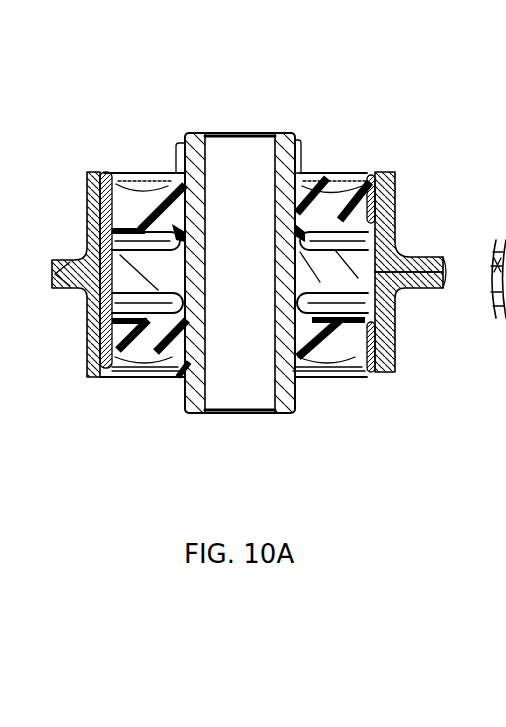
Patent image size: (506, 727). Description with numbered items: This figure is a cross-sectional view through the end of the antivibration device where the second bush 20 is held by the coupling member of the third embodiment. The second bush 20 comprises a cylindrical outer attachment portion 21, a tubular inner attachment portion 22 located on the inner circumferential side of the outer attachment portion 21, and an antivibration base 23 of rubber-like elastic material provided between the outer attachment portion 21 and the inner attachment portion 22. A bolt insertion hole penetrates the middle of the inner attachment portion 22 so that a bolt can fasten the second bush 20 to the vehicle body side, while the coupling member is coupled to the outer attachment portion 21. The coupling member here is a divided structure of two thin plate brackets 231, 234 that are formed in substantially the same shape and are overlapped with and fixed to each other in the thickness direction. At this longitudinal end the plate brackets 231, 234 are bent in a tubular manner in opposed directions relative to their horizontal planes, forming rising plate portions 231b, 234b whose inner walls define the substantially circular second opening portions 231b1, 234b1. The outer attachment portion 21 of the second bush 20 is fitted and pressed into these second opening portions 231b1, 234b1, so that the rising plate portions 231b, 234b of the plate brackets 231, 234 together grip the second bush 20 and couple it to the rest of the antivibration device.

The second bush 20 is at (338, 109).
The outer attachment portion 21 is at (105, 173).
The inner attachment portion 22 is at (289, 146).
The antivibration base 23 is at (133, 205).
The plate bracket 231 is at (410, 133).
The rising plate portion 231b is at (394, 227).
The second opening portion 231b1 is at (375, 174).
The plate bracket 234 is at (418, 422).
The rising plate portion 234b is at (392, 320).
The second opening portion 234b1 is at (378, 375).